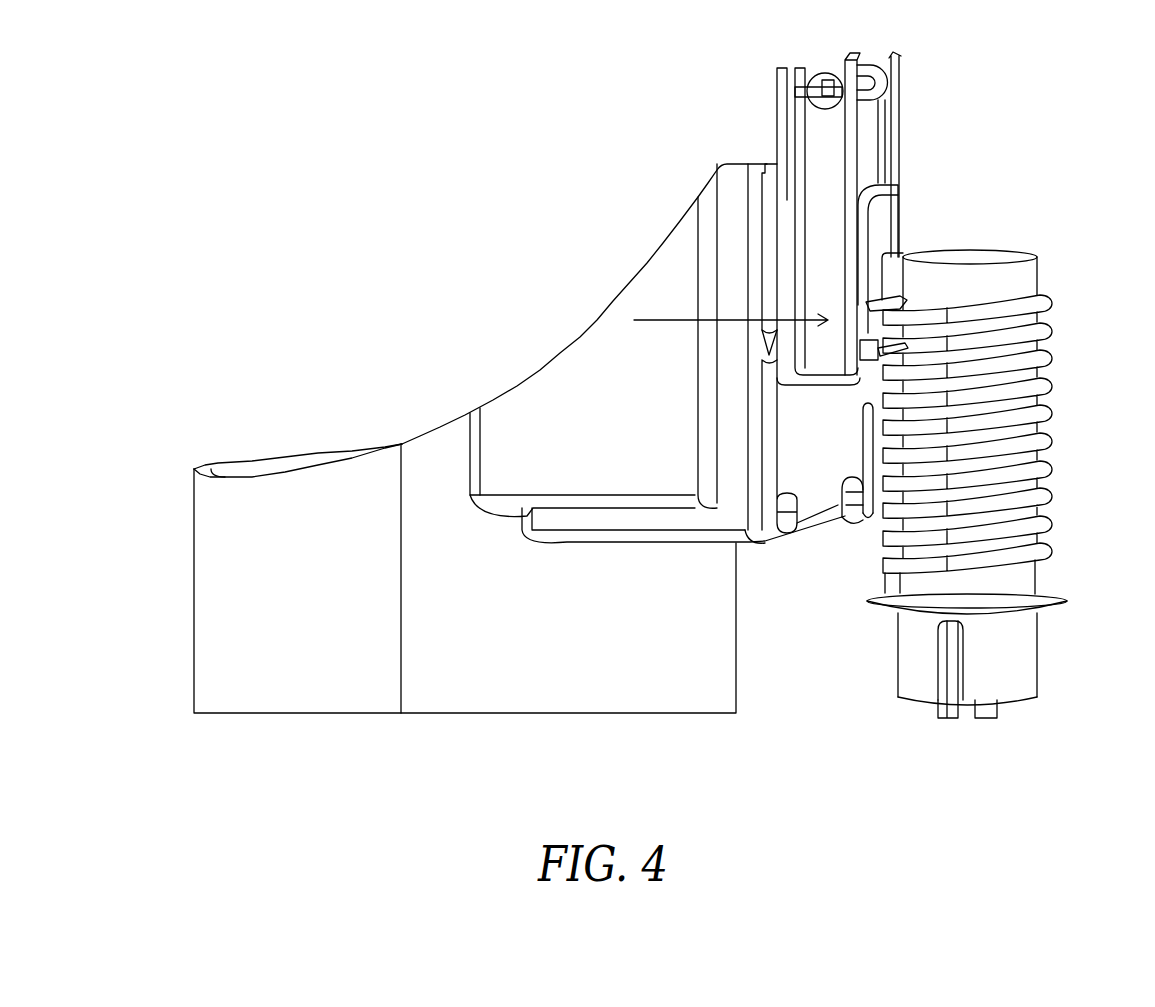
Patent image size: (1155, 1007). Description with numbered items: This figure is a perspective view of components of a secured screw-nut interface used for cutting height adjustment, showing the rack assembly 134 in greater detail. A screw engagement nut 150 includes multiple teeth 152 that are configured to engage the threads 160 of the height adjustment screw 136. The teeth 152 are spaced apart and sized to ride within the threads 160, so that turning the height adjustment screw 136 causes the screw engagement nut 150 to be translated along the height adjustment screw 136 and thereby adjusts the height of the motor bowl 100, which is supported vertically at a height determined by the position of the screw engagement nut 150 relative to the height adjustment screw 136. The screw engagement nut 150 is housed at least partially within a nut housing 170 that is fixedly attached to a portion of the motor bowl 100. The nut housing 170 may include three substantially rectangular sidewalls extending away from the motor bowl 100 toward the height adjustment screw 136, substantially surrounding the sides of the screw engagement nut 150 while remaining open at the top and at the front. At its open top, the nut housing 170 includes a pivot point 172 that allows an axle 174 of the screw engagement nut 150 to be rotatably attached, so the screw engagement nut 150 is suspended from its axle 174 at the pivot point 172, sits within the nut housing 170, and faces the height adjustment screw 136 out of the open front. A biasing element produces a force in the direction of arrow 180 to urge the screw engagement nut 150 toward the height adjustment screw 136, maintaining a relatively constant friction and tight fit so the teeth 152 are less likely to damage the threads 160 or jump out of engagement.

The motor bowl 100 is at (513, 413).
The rack assembly 134 is at (891, 231).
The height adjustment screw 136 is at (927, 577).
The screw engagement nut 150 is at (886, 293).
The teeth 152 is at (887, 357).
The threads 160 is at (905, 318).
The nut housing 170 is at (818, 150).
The pivot point 172 is at (875, 63).
The axle 174 is at (813, 92).
The arrow 180 is at (668, 322).